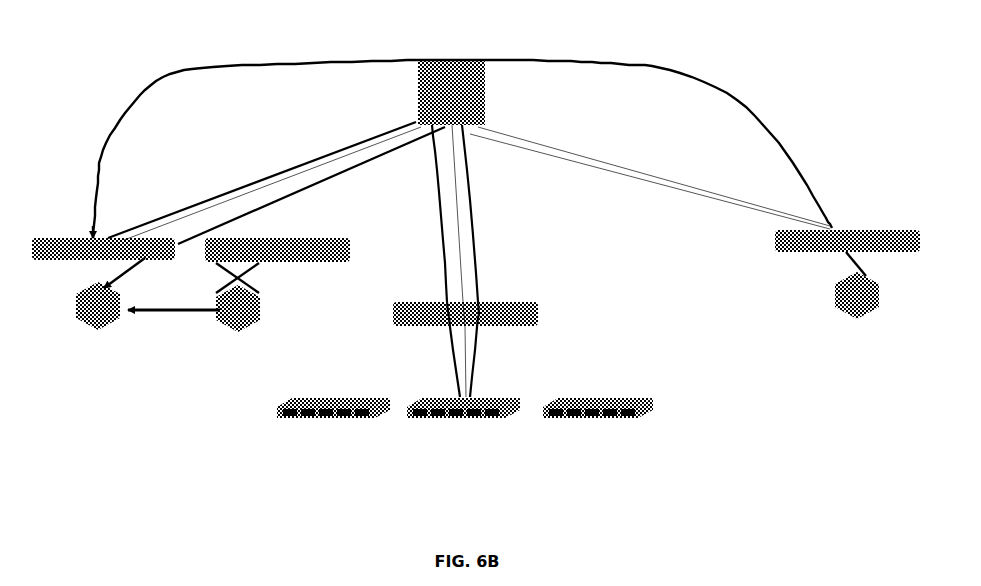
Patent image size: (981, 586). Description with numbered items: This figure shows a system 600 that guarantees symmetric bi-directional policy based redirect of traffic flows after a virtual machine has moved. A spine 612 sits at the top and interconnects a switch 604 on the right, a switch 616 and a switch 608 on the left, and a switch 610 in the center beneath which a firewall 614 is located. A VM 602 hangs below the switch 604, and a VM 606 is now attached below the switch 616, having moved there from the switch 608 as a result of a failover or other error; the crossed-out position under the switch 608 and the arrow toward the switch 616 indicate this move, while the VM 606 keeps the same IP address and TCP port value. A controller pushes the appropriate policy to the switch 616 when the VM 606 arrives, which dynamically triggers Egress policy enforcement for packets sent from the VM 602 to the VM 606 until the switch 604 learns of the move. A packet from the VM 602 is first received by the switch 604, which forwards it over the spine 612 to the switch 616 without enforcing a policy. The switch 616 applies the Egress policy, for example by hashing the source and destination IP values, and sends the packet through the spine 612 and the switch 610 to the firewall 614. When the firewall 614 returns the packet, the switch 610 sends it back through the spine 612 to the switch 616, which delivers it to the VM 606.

The network system 600 is at (687, 55).
The VM 602 is at (856, 310).
The switch 604 is at (847, 234).
The VM 606 is at (99, 319).
The switch 608 is at (239, 279).
The switch 610 is at (473, 306).
The spine 612 is at (451, 81).
The firewall 614 is at (465, 415).
The switch 616 is at (101, 257).